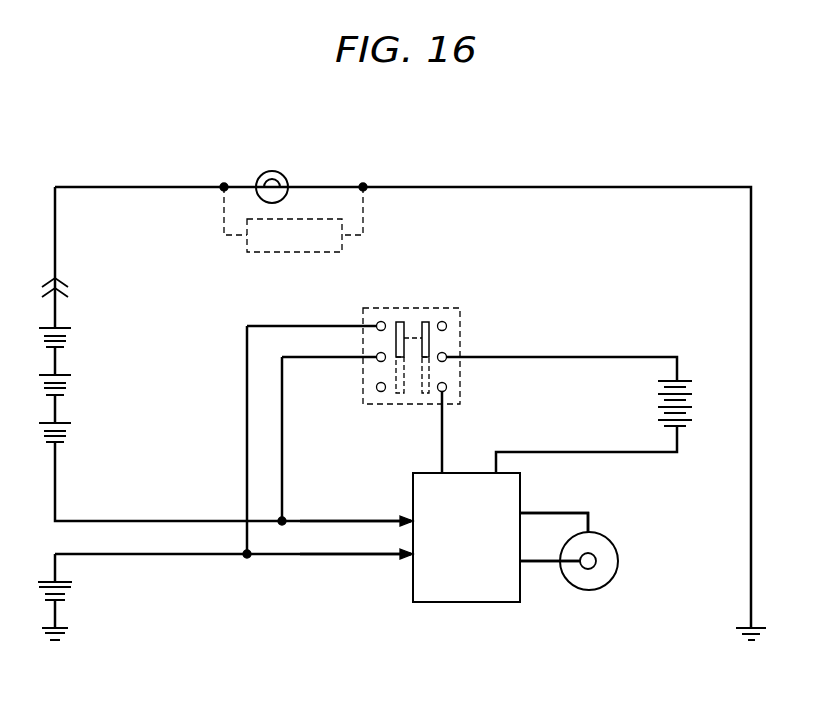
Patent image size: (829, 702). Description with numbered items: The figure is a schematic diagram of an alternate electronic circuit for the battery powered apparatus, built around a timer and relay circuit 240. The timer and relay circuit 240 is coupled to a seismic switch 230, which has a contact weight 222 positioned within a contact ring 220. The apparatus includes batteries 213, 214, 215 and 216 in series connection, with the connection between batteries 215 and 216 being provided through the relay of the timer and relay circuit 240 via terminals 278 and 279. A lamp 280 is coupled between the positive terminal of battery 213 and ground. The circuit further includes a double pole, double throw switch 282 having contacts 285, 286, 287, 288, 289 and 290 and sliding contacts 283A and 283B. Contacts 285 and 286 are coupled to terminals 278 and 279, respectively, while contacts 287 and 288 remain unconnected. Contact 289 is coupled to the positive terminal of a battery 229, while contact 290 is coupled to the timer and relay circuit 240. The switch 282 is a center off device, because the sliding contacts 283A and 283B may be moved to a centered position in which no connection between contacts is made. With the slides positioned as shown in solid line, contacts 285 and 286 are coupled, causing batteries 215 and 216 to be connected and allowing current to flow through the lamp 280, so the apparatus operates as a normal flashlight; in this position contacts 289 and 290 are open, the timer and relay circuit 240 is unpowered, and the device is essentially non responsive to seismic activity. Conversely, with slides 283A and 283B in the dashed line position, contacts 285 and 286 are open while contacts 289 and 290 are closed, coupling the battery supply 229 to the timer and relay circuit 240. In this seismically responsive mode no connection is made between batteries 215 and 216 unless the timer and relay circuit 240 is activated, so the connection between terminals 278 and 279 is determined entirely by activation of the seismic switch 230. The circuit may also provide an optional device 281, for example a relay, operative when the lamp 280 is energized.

The battery 213 is at (66, 325).
The battery 214 is at (66, 373).
The battery 215 is at (66, 420).
The battery 216 is at (68, 594).
The contact ring 220 is at (590, 590).
The contact weight 222 is at (588, 570).
The battery 229 is at (685, 379).
The seismic switch 230 is at (627, 547).
The timer and relay circuit 240 is at (465, 602).
The terminal 278 is at (408, 557).
The terminal 279 is at (409, 519).
The lamp 280 is at (285, 172).
The optional device 281 is at (343, 238).
The double pole, double throw switch 282 is at (462, 317).
The sliding contact 283A is at (400, 322).
The sliding contact 283B is at (427, 320).
The contact 285 is at (376, 323).
The contact 286 is at (380, 361).
The contact 287 is at (382, 392).
The contact 288 is at (447, 327).
The contact 289 is at (447, 358).
The contact 290 is at (447, 388).